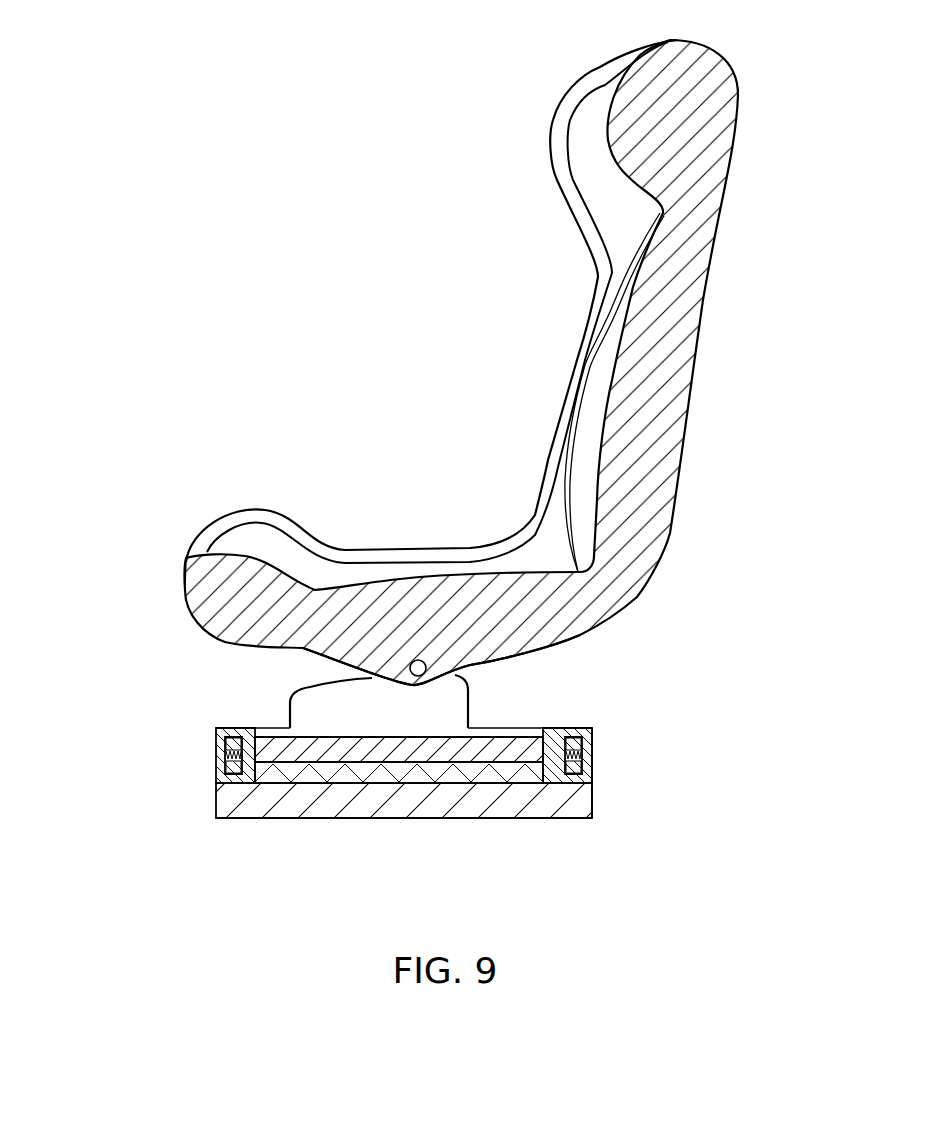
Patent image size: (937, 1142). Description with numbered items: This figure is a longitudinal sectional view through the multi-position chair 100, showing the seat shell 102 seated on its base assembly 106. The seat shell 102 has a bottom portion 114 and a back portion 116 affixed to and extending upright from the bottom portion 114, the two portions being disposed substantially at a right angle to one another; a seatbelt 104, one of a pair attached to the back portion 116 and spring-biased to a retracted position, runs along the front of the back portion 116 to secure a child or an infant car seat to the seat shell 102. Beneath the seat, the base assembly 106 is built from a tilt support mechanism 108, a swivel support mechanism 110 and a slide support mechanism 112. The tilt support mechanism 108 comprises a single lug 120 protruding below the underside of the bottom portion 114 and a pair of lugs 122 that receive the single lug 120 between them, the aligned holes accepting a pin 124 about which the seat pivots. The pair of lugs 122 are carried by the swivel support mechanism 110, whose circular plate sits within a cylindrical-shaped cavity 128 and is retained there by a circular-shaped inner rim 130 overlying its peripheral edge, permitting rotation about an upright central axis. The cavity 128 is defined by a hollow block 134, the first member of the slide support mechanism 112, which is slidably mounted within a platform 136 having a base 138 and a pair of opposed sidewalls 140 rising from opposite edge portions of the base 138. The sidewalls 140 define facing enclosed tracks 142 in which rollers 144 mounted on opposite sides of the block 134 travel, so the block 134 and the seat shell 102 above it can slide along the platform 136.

The multi-position chair 100 is at (278, 93).
The seat shell 102 is at (735, 232).
The elongated seatbelts 104 is at (577, 323).
The base assembly 106 is at (118, 582).
The tilt support mechanism 108 is at (297, 672).
The swivel support mechanism 110 is at (557, 725).
The slide support mechanism 112 is at (595, 802).
The bottom portion 114 is at (400, 597).
The back portion 116 is at (677, 298).
The single lug 120 is at (487, 660).
The pair of lugs 122 is at (300, 710).
The pin 124 is at (427, 670).
The cylindrical-shaped cavity 128 is at (303, 772).
The circular-shaped inner rim 130 is at (257, 735).
The hollow block 134 is at (452, 772).
The platform 136 is at (218, 823).
The base 138 is at (527, 813).
The opposed sidewalls 140 is at (216, 790).
The enclosed tracks 142 is at (225, 765).
The rollers 144 is at (225, 746).